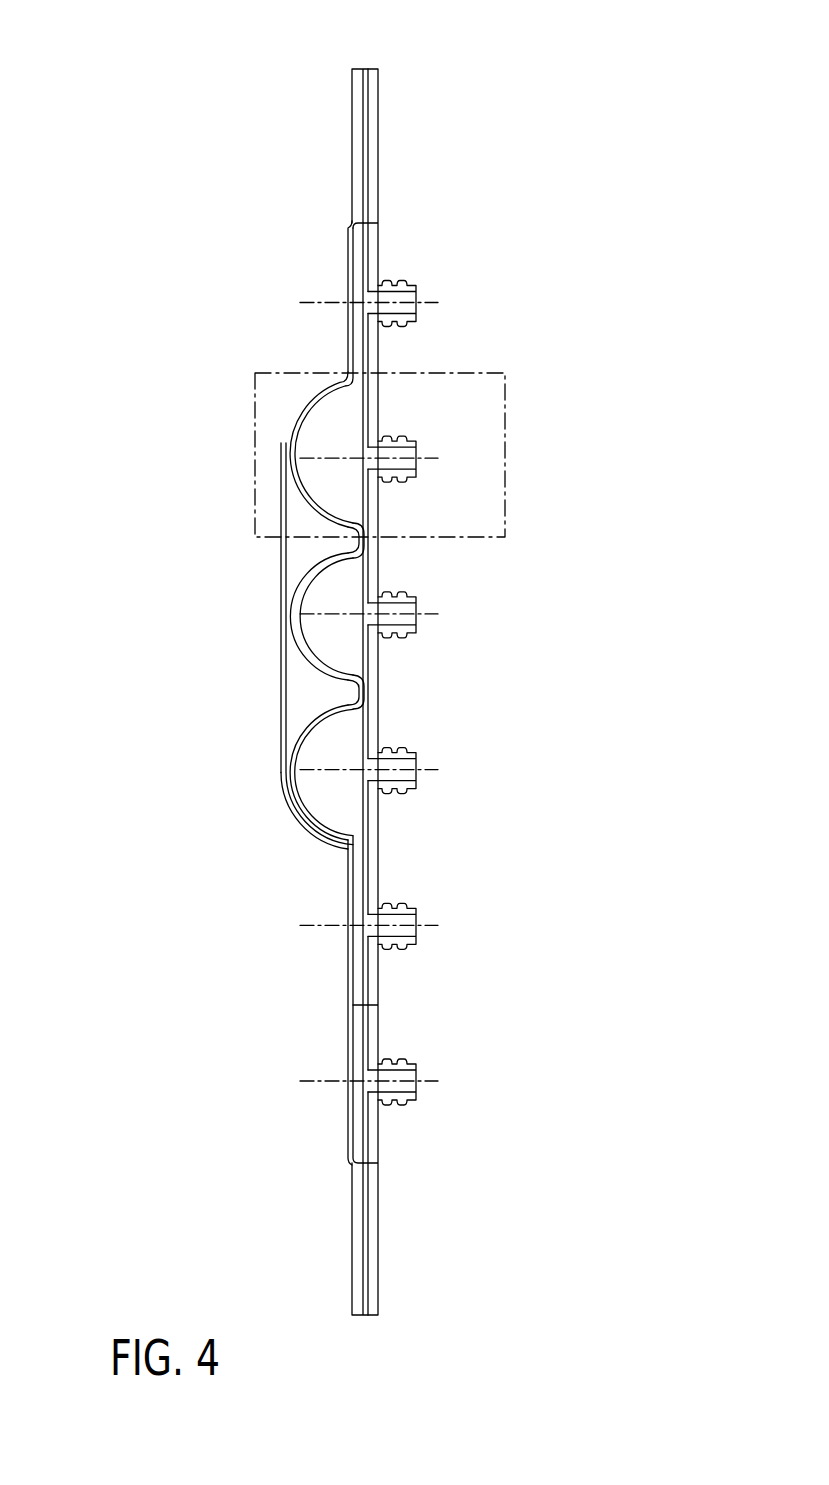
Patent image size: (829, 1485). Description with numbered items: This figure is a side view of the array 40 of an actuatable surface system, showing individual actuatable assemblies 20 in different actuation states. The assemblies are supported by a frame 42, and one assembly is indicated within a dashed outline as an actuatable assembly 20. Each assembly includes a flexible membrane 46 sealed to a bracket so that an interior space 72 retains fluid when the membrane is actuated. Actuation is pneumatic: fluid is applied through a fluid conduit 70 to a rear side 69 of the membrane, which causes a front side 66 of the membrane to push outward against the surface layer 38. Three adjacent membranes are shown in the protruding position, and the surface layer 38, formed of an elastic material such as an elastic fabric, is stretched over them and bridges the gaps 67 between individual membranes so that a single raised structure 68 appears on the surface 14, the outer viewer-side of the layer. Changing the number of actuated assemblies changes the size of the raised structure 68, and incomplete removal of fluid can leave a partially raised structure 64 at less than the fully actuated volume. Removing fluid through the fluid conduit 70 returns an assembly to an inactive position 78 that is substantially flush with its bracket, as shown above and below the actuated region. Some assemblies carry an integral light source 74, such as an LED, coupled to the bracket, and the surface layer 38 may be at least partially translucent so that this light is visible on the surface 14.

The array 40 is at (303, 60).
The frame 42 is at (352, 148).
The inactive position 78 is at (343, 271).
The actuatable assembly 20 is at (318, 372).
The raised structure 64 is at (281, 447).
The front side 66 is at (308, 512).
The interior space 72 is at (338, 493).
The flexible membrane 46 is at (337, 517).
The rear side 69 is at (318, 670).
The gap 67 is at (320, 702).
The raised structure 68 is at (273, 646).
The surface layer 38 is at (280, 707).
The surface 14 is at (280, 730).
The fluid conduit 70 is at (413, 450).
The light source 74 is at (355, 758).